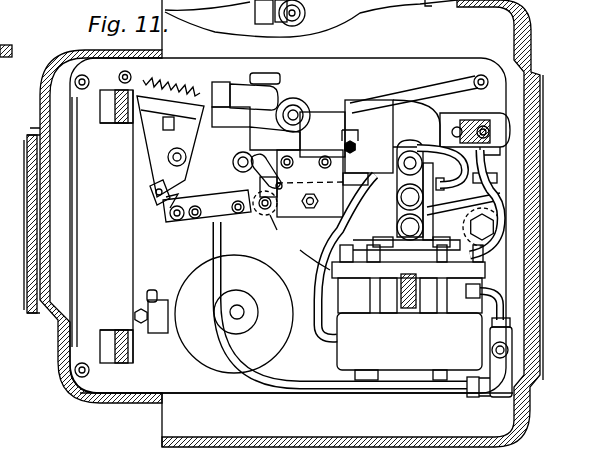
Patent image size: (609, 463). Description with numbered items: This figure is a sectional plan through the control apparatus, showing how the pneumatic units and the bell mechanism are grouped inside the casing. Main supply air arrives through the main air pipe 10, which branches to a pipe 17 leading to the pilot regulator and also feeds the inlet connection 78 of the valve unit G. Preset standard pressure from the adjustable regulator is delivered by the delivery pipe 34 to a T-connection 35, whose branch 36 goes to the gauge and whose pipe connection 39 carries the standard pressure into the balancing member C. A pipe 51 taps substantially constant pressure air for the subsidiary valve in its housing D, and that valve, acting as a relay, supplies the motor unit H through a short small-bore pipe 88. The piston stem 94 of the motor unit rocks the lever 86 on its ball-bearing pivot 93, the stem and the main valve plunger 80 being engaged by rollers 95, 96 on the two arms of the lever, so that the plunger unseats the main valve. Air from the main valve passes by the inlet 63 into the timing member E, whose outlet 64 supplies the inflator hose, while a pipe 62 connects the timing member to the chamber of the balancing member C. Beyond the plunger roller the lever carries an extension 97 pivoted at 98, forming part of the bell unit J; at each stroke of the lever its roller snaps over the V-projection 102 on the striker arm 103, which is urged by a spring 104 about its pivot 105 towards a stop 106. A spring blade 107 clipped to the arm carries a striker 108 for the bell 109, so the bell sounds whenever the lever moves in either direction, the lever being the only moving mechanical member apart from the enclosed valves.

The main air pipe 10 is at (300, 26).
The inlet connection 78 is at (133, 79).
The spring 104 is at (175, 95).
The striker arm 103 is at (182, 137).
The stop 106 is at (148, 112).
The pivot 105 is at (172, 164).
The V-projection 102 is at (160, 197).
The inlet 63 is at (303, 135).
The valve unit G is at (270, 126).
The ball-bearing pivot 93 is at (310, 212).
The extension 97 is at (202, 197).
The plunger 80 is at (241, 165).
The bell unit J is at (200, 230).
The pivot 98 is at (238, 212).
The lever 86 is at (261, 222).
The roller 96 is at (275, 225).
The roller 95 is at (307, 223).
The outlet 64 is at (322, 250).
The motor unit H is at (334, 140).
The piston stem 94 is at (355, 147).
The pipe 17 is at (385, 93).
The timing member E is at (447, 110).
The pipe 51 is at (409, 150).
The pipe 88 is at (480, 178).
The housing D is at (430, 205).
The pipe 62 is at (497, 225).
The pipe connection 39 is at (493, 288).
The balancing member C is at (350, 352).
The branch 36 is at (387, 388).
The delivery pipe 34 is at (473, 397).
The T-connection 35 is at (503, 387).
The spring blade 107 is at (148, 256).
The striker 108 is at (153, 293).
The bell 109 is at (195, 302).